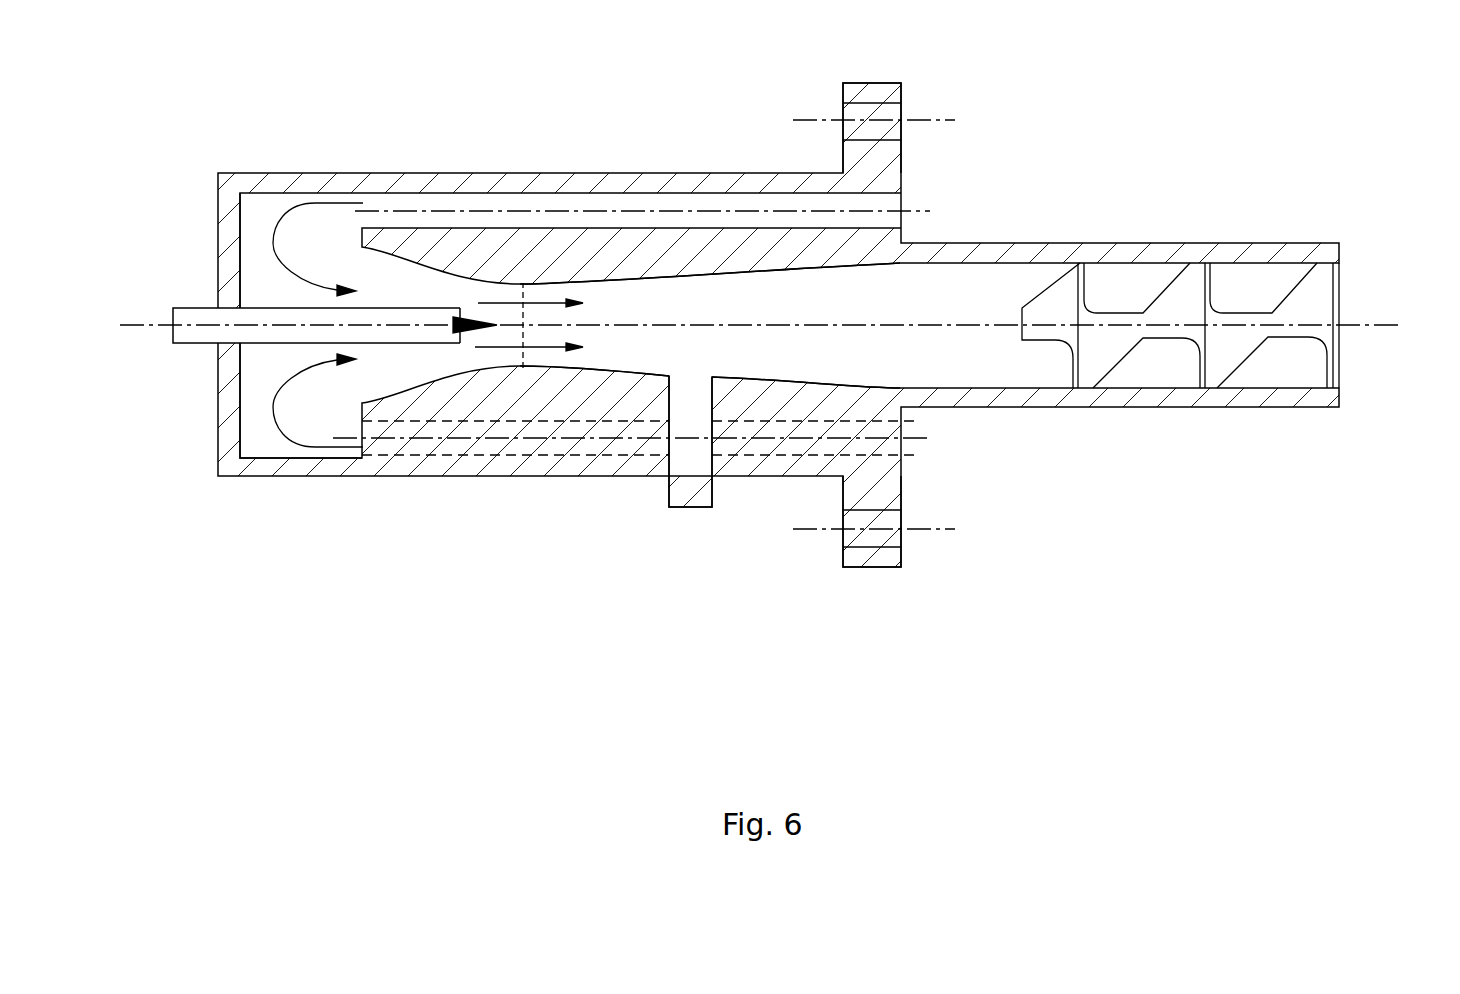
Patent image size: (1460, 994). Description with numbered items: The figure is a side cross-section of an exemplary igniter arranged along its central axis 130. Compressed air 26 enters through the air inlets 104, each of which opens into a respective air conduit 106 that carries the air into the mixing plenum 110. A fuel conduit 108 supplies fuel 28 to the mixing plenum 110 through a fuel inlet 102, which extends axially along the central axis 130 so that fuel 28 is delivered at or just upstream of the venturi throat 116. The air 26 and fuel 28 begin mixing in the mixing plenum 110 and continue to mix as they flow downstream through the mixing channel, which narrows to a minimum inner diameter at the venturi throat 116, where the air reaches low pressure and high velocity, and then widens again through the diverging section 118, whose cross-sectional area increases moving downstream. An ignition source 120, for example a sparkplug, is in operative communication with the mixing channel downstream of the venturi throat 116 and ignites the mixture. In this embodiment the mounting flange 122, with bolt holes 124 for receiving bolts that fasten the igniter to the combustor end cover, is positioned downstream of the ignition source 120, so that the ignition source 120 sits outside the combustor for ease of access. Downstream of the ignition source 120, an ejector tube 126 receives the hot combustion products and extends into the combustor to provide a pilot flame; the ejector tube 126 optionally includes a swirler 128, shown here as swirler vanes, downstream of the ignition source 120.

The compressed air 26 is at (273, 243).
The fuel 28 is at (473, 318).
The fuel inlet 102 is at (450, 333).
The air inlet 104 is at (893, 205).
The air conduit 106 is at (487, 203).
The fuel conduit 108 is at (188, 316).
The mixing plenum 110 is at (255, 390).
The venturi throat 116 is at (523, 368).
The diverging section 118 is at (805, 310).
The ignition source 120 is at (687, 495).
The mounting flange 122 is at (882, 88).
The bolt holes 124 is at (887, 130).
The ejector tube 126 is at (1107, 262).
The swirler 128 is at (1232, 365).
The central axis 130 is at (887, 321).